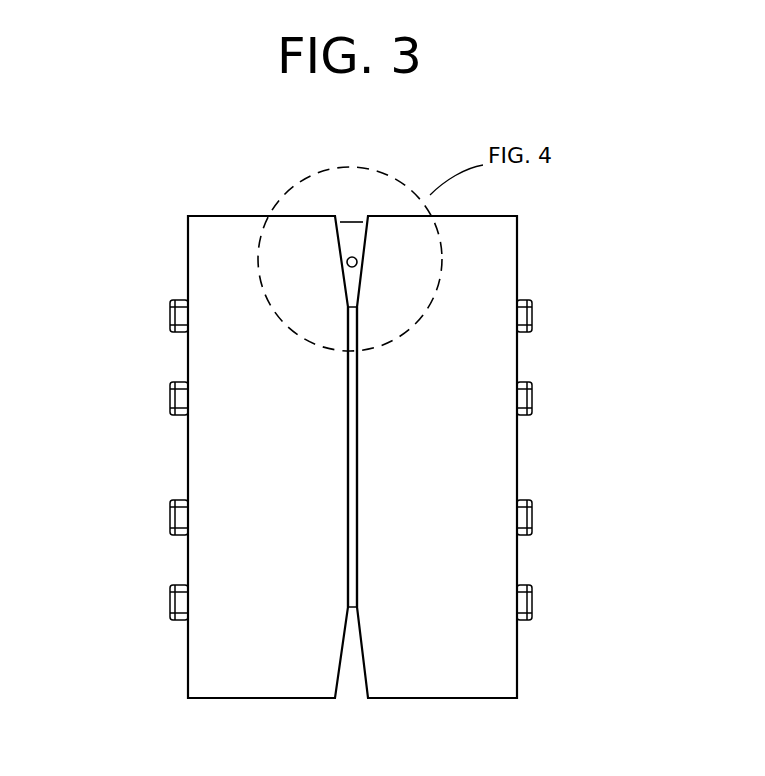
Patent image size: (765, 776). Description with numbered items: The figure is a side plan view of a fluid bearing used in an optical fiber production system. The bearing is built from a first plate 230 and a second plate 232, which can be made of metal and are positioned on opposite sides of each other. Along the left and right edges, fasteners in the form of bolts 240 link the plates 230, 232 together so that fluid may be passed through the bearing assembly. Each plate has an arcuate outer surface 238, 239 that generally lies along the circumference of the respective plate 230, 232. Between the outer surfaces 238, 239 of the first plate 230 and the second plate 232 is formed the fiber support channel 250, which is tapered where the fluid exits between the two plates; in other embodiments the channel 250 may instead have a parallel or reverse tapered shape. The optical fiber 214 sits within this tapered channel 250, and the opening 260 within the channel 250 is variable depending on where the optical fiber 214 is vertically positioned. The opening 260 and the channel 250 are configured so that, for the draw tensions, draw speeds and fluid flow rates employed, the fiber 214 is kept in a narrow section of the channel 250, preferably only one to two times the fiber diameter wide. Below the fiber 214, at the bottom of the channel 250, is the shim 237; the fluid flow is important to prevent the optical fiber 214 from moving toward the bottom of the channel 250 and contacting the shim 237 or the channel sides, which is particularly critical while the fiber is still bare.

The first plate 230 is at (188, 245).
The second plate 232 is at (529, 257).
The arcuate outer surface 238 is at (213, 216).
The arcuate outer surface 239 is at (497, 216).
The shim 237 is at (360, 290).
The optical fiber 214 is at (358, 263).
The opening 260 is at (350, 220).
The fiber support channel 250 is at (360, 210).
The bolts 240 is at (533, 315).